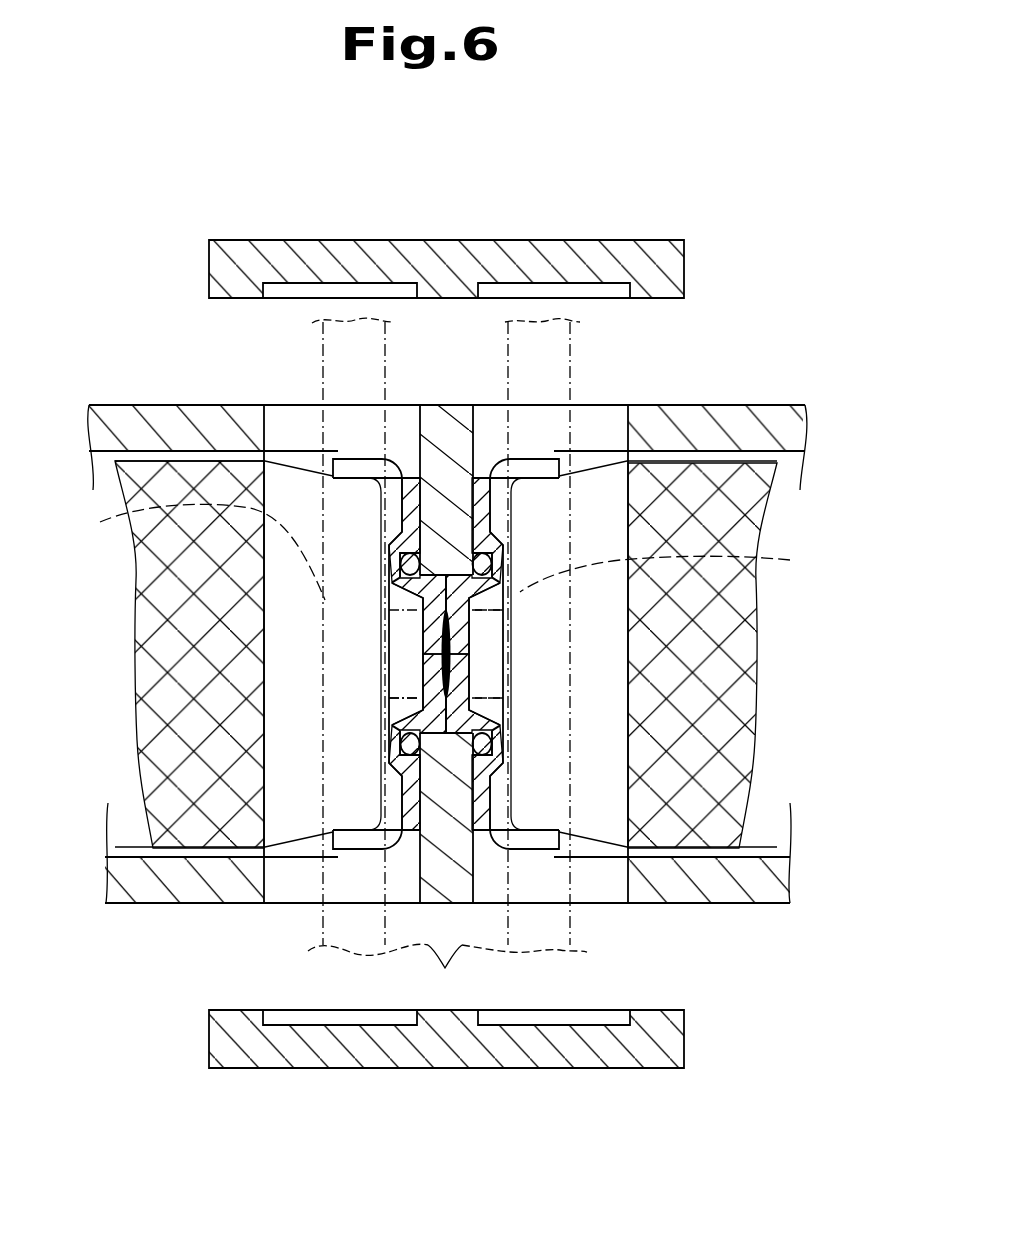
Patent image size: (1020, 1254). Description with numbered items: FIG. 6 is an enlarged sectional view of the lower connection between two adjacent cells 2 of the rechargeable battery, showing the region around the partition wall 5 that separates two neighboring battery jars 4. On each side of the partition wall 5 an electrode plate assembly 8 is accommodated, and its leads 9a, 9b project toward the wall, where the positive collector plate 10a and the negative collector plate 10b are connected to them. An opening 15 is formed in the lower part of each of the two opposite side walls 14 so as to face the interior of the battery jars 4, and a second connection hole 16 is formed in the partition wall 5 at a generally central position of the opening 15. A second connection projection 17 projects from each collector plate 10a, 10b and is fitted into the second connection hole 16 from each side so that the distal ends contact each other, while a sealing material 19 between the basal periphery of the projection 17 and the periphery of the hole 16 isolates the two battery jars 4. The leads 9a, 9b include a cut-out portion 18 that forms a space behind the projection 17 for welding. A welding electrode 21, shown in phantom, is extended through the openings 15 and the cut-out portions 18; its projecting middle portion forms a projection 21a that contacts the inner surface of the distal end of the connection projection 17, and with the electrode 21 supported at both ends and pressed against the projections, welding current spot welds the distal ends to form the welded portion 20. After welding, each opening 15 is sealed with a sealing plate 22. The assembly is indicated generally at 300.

The cell 2 is at (198, 455).
The battery jar 4 is at (122, 684).
The partition wall 5 is at (452, 420).
The electrode plate assembly 8 is at (201, 684).
The lead 9a is at (487, 632).
The lead 9b is at (405, 632).
The positive collector plate 10a is at (492, 822).
The negative collector plate 10b is at (400, 822).
The side wall 14 is at (98, 405).
The opening 15 is at (272, 422).
The second connection hole 16 is at (503, 615).
The second connection projection 17 is at (437, 688).
The cut-out portion 18 is at (262, 550).
The sealing material 19 is at (400, 752).
The welded portion 20 is at (443, 657).
The welding electrode 21 is at (447, 662).
The projection 21a is at (116, 513).
The sealing plate 22 is at (482, 240).
The fuel cell stack assembly 300 is at (128, 395).